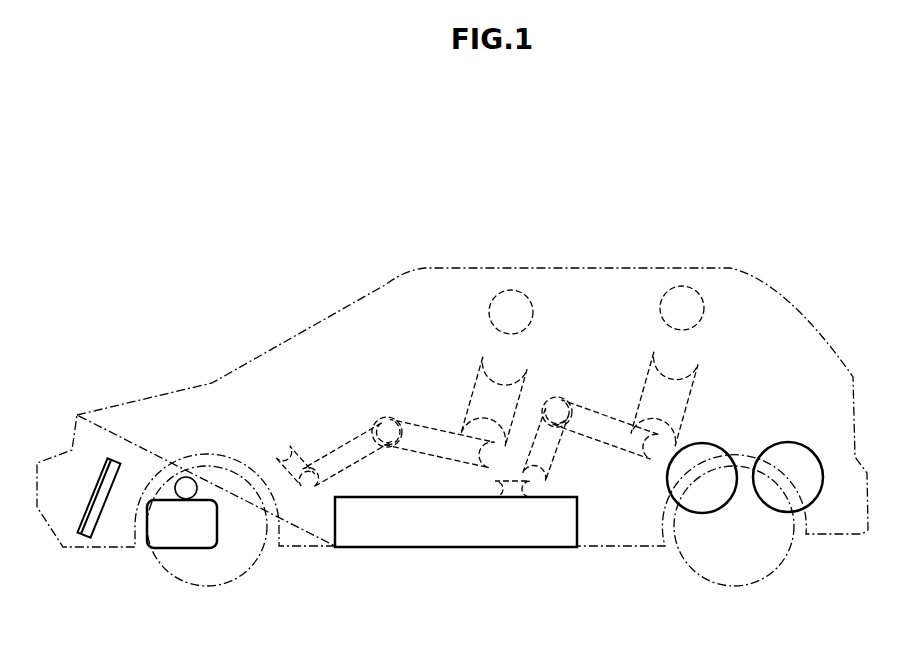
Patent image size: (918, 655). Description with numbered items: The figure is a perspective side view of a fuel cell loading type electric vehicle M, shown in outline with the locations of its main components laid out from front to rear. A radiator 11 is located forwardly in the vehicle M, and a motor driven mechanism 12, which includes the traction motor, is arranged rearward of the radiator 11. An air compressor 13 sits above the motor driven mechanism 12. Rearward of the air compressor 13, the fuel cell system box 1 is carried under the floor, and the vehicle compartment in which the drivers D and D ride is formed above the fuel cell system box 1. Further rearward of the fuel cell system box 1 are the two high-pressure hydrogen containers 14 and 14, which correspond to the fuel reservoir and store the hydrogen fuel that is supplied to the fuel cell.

The fuel cell system box 1 is at (445, 525).
The radiator 11 is at (101, 496).
The motor driven mechanism 12 is at (182, 527).
The air compressor 13 is at (186, 487).
The high-pressure hydrogen containers 14 is at (773, 495).
The fuel cell loading type electric vehicle M is at (430, 303).
The driver D is at (512, 313).